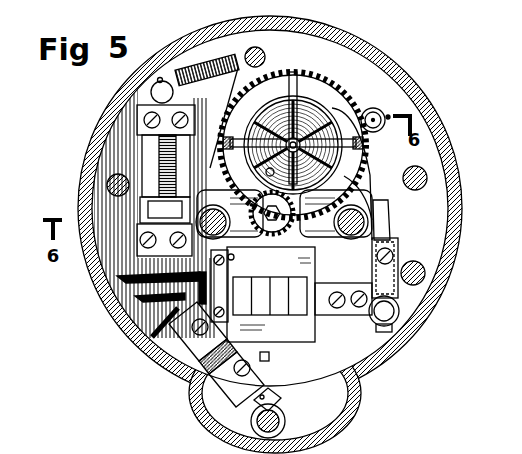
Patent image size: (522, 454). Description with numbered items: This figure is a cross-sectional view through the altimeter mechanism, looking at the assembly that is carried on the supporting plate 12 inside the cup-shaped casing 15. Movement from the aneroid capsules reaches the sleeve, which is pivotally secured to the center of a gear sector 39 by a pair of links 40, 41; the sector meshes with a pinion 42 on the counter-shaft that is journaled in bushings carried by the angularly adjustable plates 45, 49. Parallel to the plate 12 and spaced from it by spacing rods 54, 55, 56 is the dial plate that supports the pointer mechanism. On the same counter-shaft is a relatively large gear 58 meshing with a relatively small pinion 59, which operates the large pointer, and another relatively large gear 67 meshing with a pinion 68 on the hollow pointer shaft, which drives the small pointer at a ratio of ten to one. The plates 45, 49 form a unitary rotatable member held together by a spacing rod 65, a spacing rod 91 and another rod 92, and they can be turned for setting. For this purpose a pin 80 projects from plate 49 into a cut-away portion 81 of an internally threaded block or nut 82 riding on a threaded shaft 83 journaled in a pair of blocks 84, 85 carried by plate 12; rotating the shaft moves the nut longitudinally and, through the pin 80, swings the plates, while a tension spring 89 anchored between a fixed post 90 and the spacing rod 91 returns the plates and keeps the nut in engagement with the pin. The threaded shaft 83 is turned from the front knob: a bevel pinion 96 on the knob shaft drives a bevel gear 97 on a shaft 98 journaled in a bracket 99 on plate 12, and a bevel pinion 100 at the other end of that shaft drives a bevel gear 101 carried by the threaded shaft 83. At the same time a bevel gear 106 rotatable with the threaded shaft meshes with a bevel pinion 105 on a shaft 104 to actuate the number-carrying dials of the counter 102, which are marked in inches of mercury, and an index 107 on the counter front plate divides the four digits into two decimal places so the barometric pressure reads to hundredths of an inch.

The supporting plate 12 is at (340, 56).
The cup-shaped casing 15 is at (392, 113).
The gear sector 39 is at (220, 118).
The link 40 is at (388, 224).
The link 41 is at (385, 209).
The pinion 42 is at (269, 195).
The angularly adjustable plate 45 is at (376, 176).
The angularly adjustable plate 49 is at (150, 95).
The spacing rod 54 is at (428, 177).
The spacing rod 55 is at (426, 275).
The spacing rod 56 is at (107, 184).
The gear 58 is at (314, 72).
The pinion 59 is at (229, 256).
The spacing rod 65 is at (226, 194).
The gear 67 is at (335, 108).
The pinion 68 is at (310, 222).
The pin 80 is at (140, 205).
The cut-away portion 81 is at (110, 240).
The block or nut 82 is at (165, 209).
The threaded shaft 83 is at (159, 152).
The block 84 is at (137, 122).
The block 85 is at (117, 277).
The tension spring 89 is at (208, 56).
The fixed post 90 is at (158, 77).
The spacing rod 91 is at (265, 58).
The rod 92 is at (344, 240).
The bevel pinion 96 is at (286, 422).
The bevel gear 97 is at (282, 398).
The shaft 98 is at (268, 360).
The bracket 99 is at (240, 350).
The bevel pinion 100 is at (168, 333).
The bevel gear 101 is at (150, 318).
The counter 102 is at (316, 333).
The shaft 104 is at (228, 270).
The bevel pinion 105 is at (190, 355).
The bevel gear 106 is at (135, 298).
The index 107 is at (270, 318).